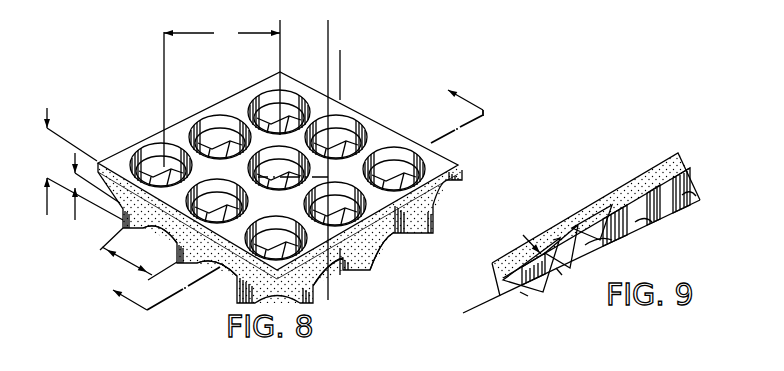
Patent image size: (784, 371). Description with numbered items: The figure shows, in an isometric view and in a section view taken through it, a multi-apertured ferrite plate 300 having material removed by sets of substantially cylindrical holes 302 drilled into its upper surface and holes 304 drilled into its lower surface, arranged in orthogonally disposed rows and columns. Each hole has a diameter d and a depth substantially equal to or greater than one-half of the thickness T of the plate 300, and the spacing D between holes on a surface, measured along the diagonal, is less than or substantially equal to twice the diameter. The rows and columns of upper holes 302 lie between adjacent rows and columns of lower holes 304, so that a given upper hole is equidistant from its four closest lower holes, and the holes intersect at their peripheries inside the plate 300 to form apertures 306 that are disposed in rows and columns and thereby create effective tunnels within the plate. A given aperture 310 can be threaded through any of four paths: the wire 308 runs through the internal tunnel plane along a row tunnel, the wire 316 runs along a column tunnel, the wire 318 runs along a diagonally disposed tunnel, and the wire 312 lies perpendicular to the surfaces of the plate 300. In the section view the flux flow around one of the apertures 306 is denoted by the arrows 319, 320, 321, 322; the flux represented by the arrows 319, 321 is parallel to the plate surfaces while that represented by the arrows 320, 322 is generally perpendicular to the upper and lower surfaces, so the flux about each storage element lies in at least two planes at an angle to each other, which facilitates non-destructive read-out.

In FIG. 8, the plate 300 is at (217, 101).
In FIG. 9, the plate 300 is at (628, 178).
In FIG. 8, the holes 302 is at (150, 143).
In FIG. 8, the holes 304 is at (130, 225).
In FIG. 9, the holes 304 is at (523, 284).
In FIG. 8, the apertures 306 is at (272, 95).
In FIG. 9, the apertures 306 is at (585, 252).
In FIG. 8, the wire 308 is at (197, 285).
In FIG. 9, the wire 308 is at (493, 268).
In FIG. 8, the aperture 310 is at (340, 190).
In FIG. 8, the wire 312 is at (331, 27).
In FIG. 8, the wire 316 is at (190, 113).
In FIG. 8, the wire 318 is at (340, 80).
In FIG. 9, the arrow 319 is at (520, 239).
In FIG. 9, the arrow 320 is at (552, 240).
In FIG. 9, the arrow 321 is at (558, 270).
In FIG. 9, the arrow 322 is at (525, 298).
In FIG. 8, the spacing D is at (222, 93).
In FIG. 8, the thickness T is at (82, 164).
In FIG. 8, the diameter d is at (138, 254).